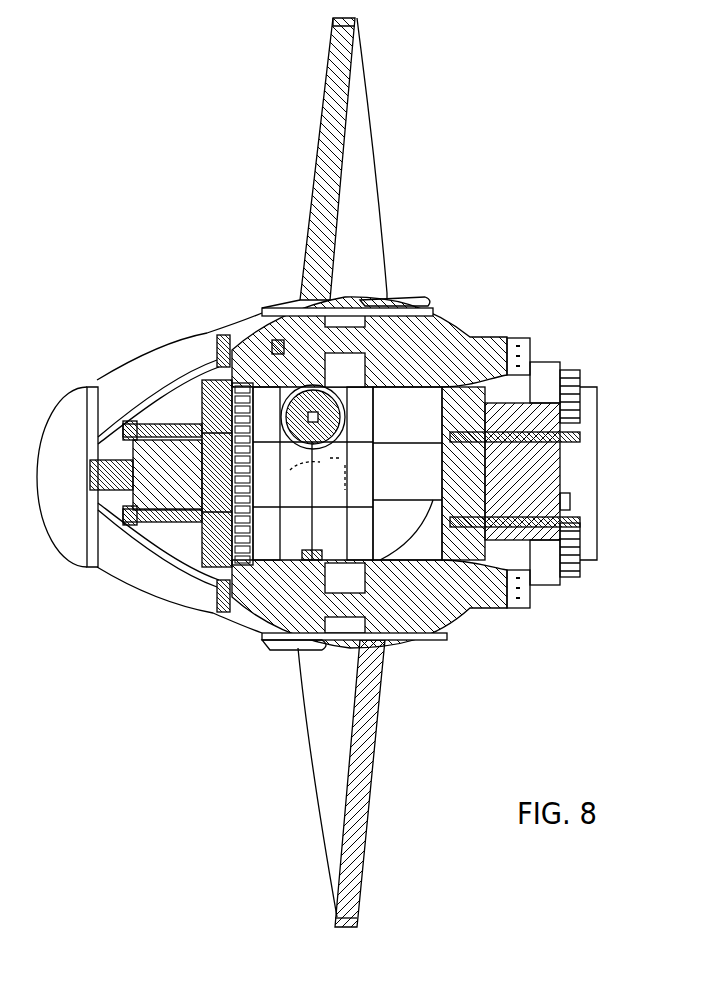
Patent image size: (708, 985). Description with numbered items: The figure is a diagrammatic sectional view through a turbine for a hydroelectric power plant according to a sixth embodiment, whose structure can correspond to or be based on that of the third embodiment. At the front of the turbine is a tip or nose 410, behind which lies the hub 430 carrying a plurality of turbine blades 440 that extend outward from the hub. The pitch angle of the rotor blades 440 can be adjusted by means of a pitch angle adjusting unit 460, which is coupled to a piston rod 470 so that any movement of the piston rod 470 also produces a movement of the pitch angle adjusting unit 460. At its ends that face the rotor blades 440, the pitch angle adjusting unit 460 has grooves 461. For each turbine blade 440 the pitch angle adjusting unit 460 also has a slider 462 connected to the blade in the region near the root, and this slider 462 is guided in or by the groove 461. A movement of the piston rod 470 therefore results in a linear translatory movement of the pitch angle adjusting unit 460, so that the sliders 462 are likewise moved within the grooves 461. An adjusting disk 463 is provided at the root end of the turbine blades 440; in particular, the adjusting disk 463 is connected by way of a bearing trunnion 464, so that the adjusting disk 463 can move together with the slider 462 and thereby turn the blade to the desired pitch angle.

The nose 410 is at (57, 450).
The hub 430 is at (470, 337).
The turbine blade 440 is at (362, 137).
The pitch angle adjusting unit 460 is at (420, 312).
The groove 461 is at (300, 474).
The slider 462 is at (277, 350).
The adjusting disk 463 is at (407, 420).
The bearing trunnion 464 is at (293, 385).
The piston rod 470 is at (418, 480).